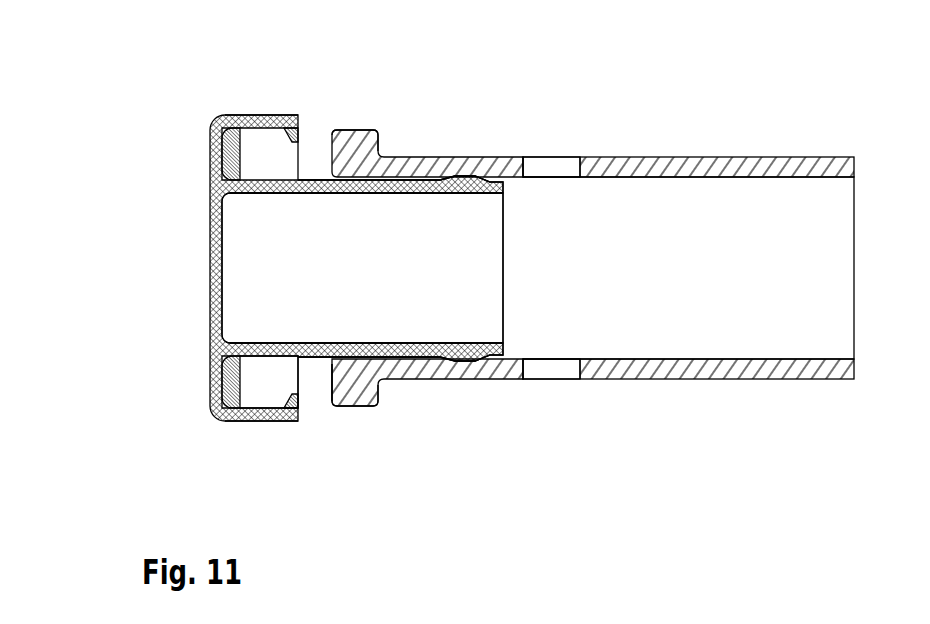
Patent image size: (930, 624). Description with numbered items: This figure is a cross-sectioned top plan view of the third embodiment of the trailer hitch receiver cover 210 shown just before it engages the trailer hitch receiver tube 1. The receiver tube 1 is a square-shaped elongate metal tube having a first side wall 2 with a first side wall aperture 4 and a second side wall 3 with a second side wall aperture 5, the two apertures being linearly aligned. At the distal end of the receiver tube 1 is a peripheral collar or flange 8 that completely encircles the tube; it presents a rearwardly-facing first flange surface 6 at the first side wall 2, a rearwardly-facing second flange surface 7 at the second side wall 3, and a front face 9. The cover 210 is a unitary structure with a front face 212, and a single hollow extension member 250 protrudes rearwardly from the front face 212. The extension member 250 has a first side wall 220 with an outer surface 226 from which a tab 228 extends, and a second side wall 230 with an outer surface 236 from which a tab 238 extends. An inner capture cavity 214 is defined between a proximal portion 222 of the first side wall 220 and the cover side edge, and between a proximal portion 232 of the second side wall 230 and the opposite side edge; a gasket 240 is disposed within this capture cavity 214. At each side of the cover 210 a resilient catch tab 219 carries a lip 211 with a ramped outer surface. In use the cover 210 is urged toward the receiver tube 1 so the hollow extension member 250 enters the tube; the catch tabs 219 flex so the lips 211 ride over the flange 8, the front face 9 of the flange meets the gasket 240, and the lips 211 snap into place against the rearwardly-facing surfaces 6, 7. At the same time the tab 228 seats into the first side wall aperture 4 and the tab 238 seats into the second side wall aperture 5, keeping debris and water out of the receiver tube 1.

The trailer hitch receiver cover 210 is at (100, 64).
The front face 212 is at (213, 277).
The gasket 240 is at (232, 156).
The lip 211 is at (291, 132).
The catch tab 219 is at (252, 115).
The inner capture cavity 214 is at (259, 387).
The first side wall 220 is at (394, 185).
The outer surface 226 is at (317, 180).
The proximal portion 222 is at (248, 193).
The tab 228 is at (460, 180).
The second side wall 230 is at (482, 322).
The outer surface 236 is at (313, 355).
The proximal portion 232 is at (248, 343).
The tab 238 is at (459, 356).
The hollow extension member 250 is at (482, 260).
The first flange surface 6 is at (377, 145).
The second flange surface 7 is at (377, 392).
The flange 8 is at (360, 147).
The front face of the flange 9 is at (332, 379).
The first side wall 2 is at (808, 165).
The first side wall aperture 4 is at (568, 167).
The second side wall 3 is at (804, 372).
The second side wall aperture 5 is at (564, 372).
The trailer hitch receiver tube 1 is at (833, 272).